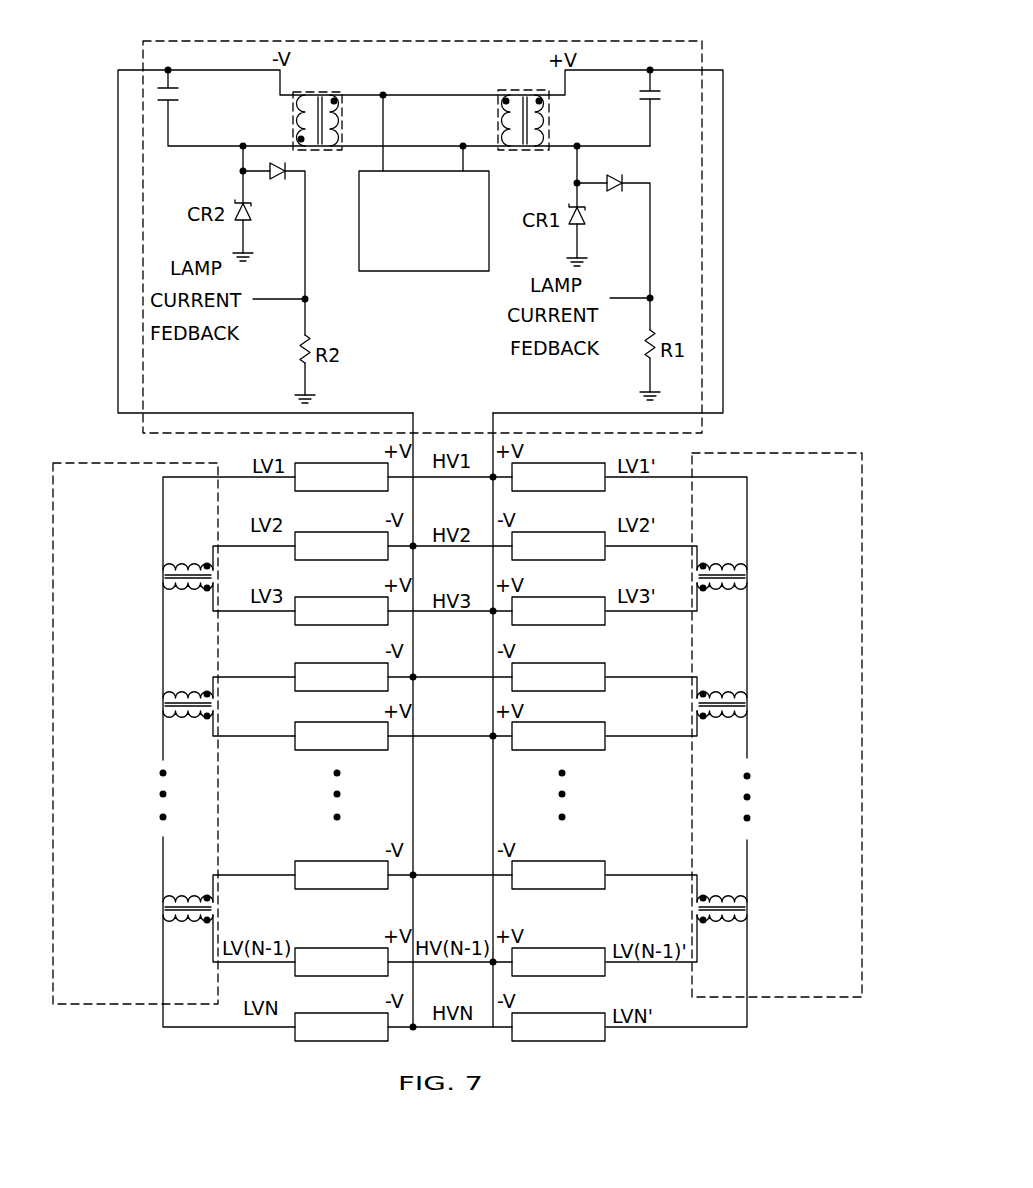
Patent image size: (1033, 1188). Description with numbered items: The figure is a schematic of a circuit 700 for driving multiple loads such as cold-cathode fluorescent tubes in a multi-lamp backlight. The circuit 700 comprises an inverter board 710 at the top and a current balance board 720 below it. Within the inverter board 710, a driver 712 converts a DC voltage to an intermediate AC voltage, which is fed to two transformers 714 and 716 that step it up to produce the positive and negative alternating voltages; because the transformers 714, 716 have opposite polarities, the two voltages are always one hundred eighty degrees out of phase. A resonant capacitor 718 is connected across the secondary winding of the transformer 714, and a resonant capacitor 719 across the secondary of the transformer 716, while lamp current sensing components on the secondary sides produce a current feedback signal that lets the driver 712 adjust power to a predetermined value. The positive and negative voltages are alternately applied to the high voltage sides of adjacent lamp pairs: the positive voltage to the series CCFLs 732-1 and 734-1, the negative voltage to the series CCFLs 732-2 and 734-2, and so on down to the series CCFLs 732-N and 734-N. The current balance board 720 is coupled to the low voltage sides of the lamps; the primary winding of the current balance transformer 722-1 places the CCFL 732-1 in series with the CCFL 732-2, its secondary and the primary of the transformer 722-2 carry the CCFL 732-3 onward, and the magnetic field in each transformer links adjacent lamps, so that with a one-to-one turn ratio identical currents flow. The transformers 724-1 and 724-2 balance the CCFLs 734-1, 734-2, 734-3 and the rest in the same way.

The circuit 700 is at (122, 60).
The inverter board 710 is at (600, 41).
The driver 712 is at (421, 271).
The transformer 714 is at (311, 92).
The transformer 716 is at (518, 90).
The resonant capacitor 718 is at (168, 100).
The resonant capacitor 719 is at (648, 100).
The current balance board 720 is at (120, 463).
The current balance transformer 722-1 is at (163, 575).
The current balance transformer 722-2 is at (163, 703).
The current balance transformer 724-1 is at (747, 575).
The current balance transformer 724-2 is at (747, 703).
The CCFL 732-1 is at (365, 463).
The CCFL 732-2 is at (365, 532).
The CCFL 732-3 is at (365, 597).
The CCFL 732-N is at (365, 1013).
The CCFL 734-1 is at (533, 463).
The CCFL 734-2 is at (533, 532).
The CCFL 734-3 is at (533, 597).
The CCFL 734-N is at (533, 1013).